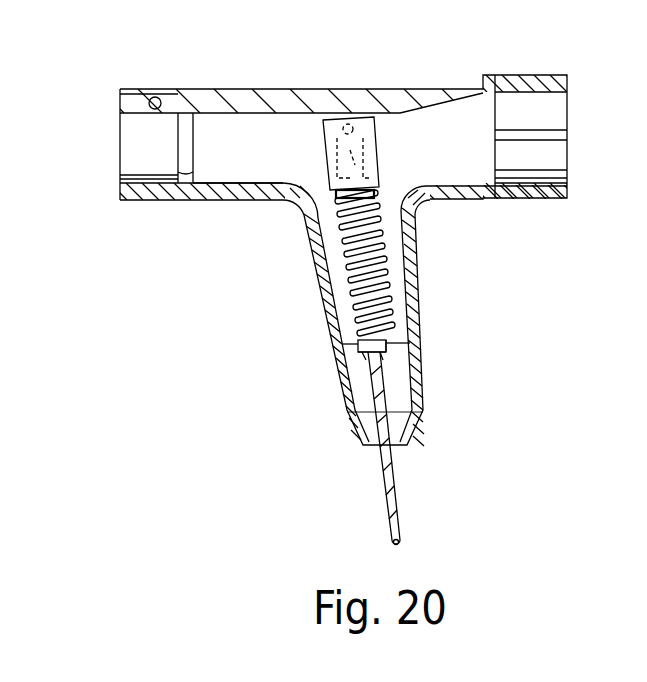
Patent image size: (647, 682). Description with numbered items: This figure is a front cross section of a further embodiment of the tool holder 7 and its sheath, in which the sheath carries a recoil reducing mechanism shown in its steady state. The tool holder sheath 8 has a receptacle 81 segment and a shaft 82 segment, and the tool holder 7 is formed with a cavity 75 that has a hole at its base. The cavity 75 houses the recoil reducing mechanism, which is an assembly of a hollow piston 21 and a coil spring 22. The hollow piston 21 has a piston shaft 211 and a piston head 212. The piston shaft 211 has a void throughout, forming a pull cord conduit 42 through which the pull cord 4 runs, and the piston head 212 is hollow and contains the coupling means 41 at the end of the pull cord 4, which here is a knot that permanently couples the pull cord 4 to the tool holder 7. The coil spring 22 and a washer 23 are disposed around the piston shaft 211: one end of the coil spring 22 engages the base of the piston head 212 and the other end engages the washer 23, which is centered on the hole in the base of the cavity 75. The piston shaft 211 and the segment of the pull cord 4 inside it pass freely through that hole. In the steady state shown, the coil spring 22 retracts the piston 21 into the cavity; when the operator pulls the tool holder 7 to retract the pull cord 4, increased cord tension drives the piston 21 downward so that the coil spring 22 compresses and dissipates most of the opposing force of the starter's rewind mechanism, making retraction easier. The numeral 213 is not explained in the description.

The tool holder 7 is at (440, 70).
The cavity 75 is at (220, 122).
The receptacle segment 81 is at (185, 203).
The hollow piston 21 is at (299, 175).
The tool holder sheath 8 is at (349, 327).
The shaft segment 82 is at (320, 291).
The piston head 212 is at (395, 215).
The coupling means 41 is at (312, 106).
The hidden passage in valve block 213 is at (335, 118).
The coil spring 22 is at (350, 335).
The washer 23 is at (345, 347).
The piston shaft 211 is at (388, 348).
The pull cord conduit 42 is at (353, 353).
The pull cord 4 is at (398, 500).